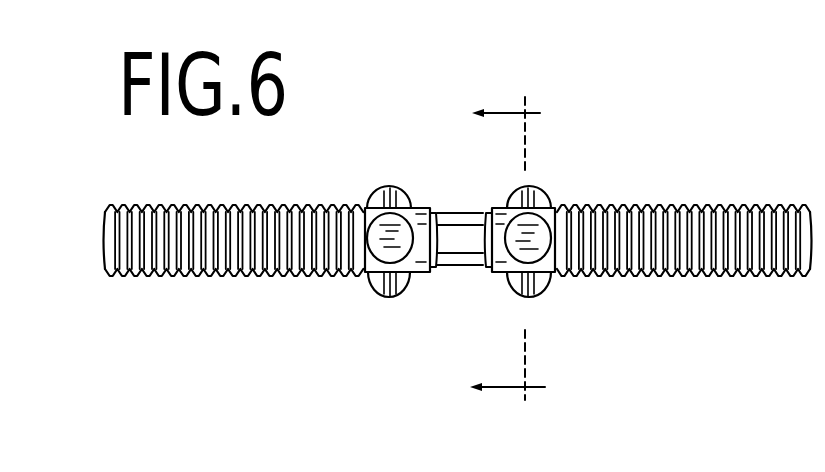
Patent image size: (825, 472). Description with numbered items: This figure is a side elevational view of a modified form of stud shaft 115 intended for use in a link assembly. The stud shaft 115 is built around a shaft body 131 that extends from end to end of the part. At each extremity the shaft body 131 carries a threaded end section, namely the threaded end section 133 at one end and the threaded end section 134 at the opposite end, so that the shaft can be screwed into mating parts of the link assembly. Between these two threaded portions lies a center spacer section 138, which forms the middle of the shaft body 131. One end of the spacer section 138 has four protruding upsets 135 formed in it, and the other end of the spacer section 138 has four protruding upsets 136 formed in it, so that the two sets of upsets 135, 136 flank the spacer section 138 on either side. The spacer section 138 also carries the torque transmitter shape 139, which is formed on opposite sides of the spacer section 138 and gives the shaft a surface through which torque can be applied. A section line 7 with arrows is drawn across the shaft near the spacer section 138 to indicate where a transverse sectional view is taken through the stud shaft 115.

The stud shaft 115 is at (320, 295).
The shaft body 131 is at (327, 204).
The threaded end section 133 is at (142, 206).
The threaded end section 134 is at (665, 208).
The protruding upsets 135 is at (390, 188).
The protruding upsets 136 is at (540, 187).
The center spacer section 138 is at (447, 258).
The torque transmitter shape 139 is at (457, 216).
The section line 7- 7 is at (510, 248).